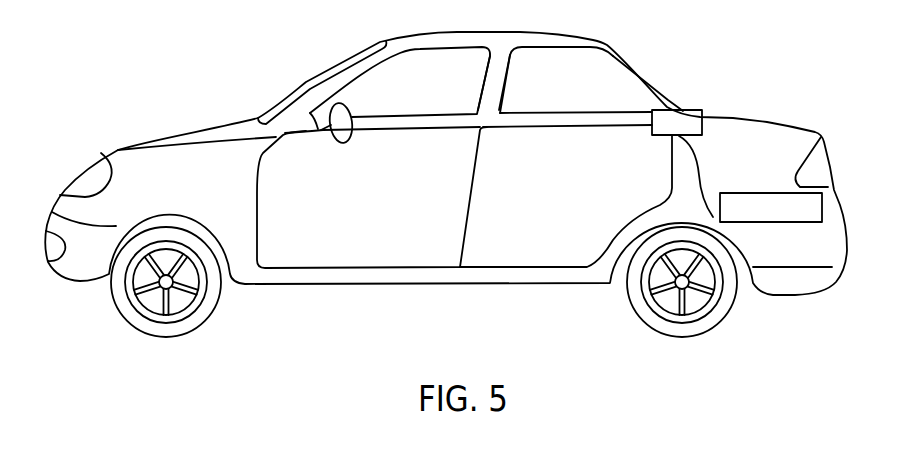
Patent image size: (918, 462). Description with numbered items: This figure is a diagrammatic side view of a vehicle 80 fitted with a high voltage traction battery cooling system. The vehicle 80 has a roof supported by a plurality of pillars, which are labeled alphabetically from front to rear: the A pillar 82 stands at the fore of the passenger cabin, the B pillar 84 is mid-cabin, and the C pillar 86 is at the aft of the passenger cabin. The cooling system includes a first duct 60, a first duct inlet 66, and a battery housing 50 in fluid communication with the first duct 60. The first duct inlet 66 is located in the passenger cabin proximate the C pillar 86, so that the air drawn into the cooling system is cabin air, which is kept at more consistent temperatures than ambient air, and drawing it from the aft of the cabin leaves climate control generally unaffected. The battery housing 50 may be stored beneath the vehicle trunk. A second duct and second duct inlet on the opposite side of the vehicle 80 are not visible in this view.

The vehicle 80 is at (255, 73).
The A pillar 82 is at (367, 65).
The B pillar 84 is at (502, 53).
The C pillar 86 is at (623, 72).
The first duct inlet 66 is at (682, 115).
The first duct 60 is at (703, 153).
The battery housing 50 is at (757, 194).